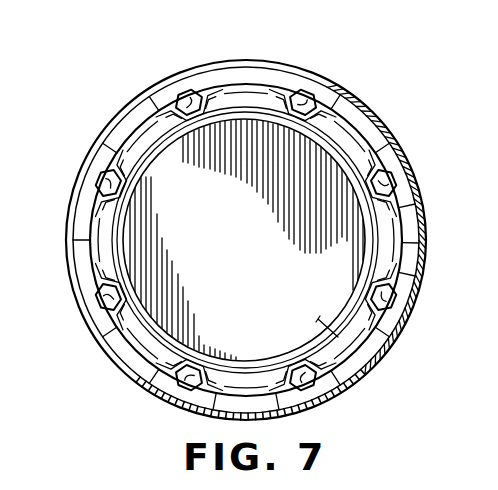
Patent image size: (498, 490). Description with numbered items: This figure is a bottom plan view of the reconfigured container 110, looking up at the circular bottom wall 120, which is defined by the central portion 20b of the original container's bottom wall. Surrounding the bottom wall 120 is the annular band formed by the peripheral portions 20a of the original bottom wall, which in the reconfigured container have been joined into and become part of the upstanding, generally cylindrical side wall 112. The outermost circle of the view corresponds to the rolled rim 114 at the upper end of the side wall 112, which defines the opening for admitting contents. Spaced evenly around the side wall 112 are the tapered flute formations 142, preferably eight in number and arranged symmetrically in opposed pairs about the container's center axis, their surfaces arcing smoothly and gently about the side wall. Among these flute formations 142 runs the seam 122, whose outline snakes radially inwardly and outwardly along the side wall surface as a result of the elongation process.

The reconfigured container 110 is at (313, 52).
The side wall 112 is at (221, 82).
The rolled rim 114 is at (114, 347).
The circular bottom wall 120 is at (226, 222).
The seam 122 is at (140, 133).
The tapered flute formations 142 is at (192, 88).
The peripheral portions of the bottom wall 20a is at (392, 349).
The central portion of the bottom wall 20b is at (367, 374).